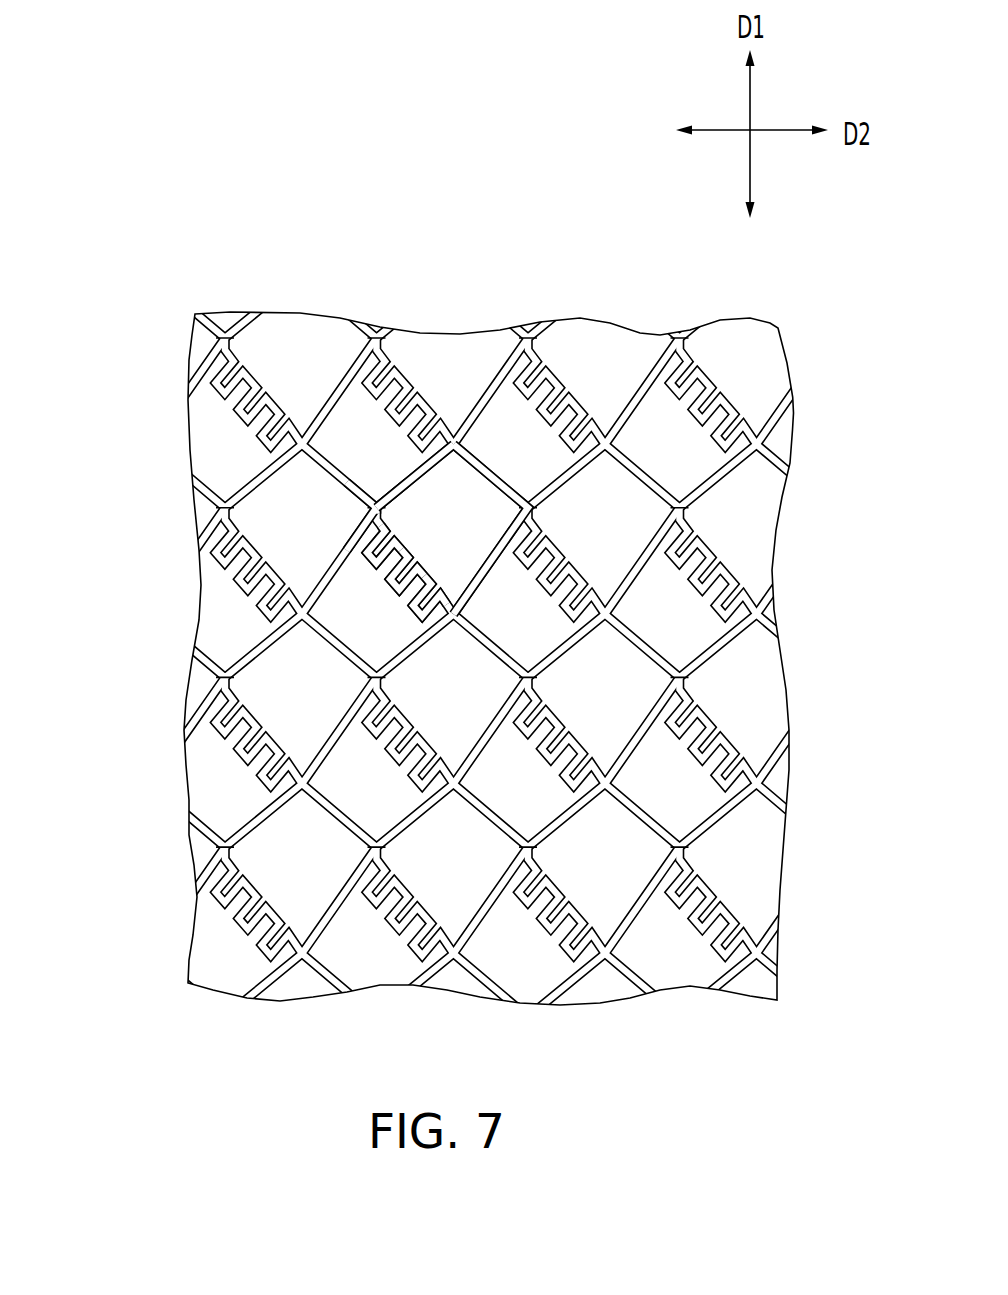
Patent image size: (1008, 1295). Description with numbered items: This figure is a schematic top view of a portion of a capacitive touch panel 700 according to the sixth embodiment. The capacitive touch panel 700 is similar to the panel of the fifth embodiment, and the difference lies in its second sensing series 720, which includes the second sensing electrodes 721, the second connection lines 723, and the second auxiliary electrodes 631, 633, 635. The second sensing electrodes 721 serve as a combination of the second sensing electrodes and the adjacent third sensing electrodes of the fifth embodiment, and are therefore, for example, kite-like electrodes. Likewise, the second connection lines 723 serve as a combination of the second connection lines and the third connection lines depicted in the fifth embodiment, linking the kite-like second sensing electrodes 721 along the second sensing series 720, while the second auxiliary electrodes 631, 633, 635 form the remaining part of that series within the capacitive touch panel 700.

The capacitive touch panel 700 is at (862, 1166).
The second sensing series 720 is at (73, 467).
The second sensing electrode 721 is at (430, 530).
The second connection line 723 is at (376, 508).
The second auxiliary electrode 631 is at (380, 551).
The second auxiliary electrode 633 is at (403, 576).
The second auxiliary electrode 635 is at (425, 603).